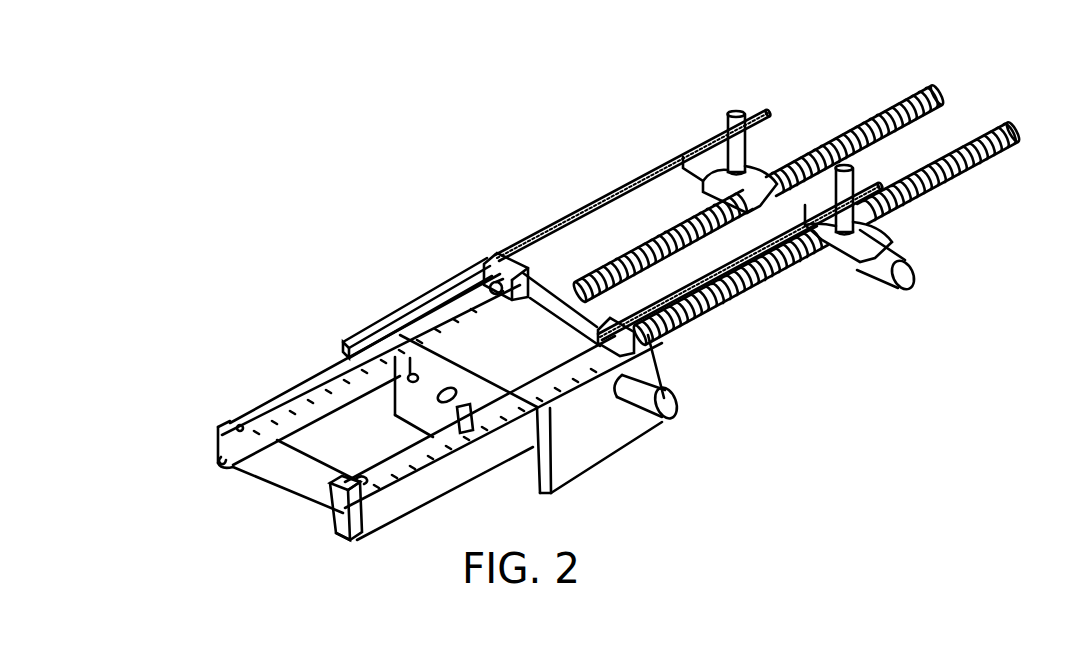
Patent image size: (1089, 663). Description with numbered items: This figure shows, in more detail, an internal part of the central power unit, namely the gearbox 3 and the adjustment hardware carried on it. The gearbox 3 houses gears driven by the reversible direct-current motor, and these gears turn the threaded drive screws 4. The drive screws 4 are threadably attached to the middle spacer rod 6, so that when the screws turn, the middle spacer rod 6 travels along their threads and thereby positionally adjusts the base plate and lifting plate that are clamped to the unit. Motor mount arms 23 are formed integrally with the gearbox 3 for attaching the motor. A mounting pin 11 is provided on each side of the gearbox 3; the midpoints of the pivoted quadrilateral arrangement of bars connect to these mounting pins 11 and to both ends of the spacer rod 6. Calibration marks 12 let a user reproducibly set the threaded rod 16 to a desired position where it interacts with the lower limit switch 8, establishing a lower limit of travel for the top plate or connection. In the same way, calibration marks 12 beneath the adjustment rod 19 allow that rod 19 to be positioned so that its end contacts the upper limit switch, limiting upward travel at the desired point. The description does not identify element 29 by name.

The gearbox 3 is at (587, 433).
The drive screws 4 is at (940, 92).
The middle spacer rod 6 is at (868, 236).
The lower limit switch 8 is at (487, 263).
The mounting pin 11 is at (657, 340).
The calibration marks 12 is at (375, 461).
The threaded rod 16 is at (405, 305).
The adjustment rod 19 is at (647, 408).
The motor mount arms 23 is at (227, 422).
The front end stop 29 is at (358, 500).